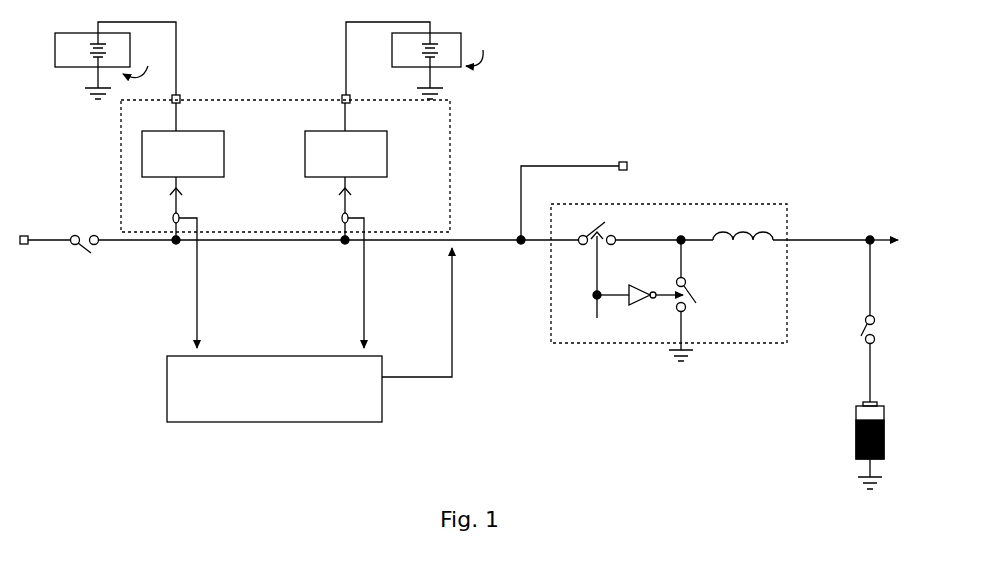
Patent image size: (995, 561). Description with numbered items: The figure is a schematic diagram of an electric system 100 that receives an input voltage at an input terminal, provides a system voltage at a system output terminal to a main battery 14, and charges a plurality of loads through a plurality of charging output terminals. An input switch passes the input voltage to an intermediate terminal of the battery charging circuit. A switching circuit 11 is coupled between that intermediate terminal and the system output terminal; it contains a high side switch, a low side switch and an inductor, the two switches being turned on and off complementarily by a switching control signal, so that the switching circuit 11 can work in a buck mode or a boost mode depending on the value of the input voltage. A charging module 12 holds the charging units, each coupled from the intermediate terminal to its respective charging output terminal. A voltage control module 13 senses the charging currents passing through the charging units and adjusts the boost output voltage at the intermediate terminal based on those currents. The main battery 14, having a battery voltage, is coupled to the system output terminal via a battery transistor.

The electric system 100 is at (465, 255).
The switching circuit 11 is at (795, 222).
The charging module 12 is at (461, 159).
The voltage control module 13 is at (277, 427).
The main battery 14 is at (838, 403).